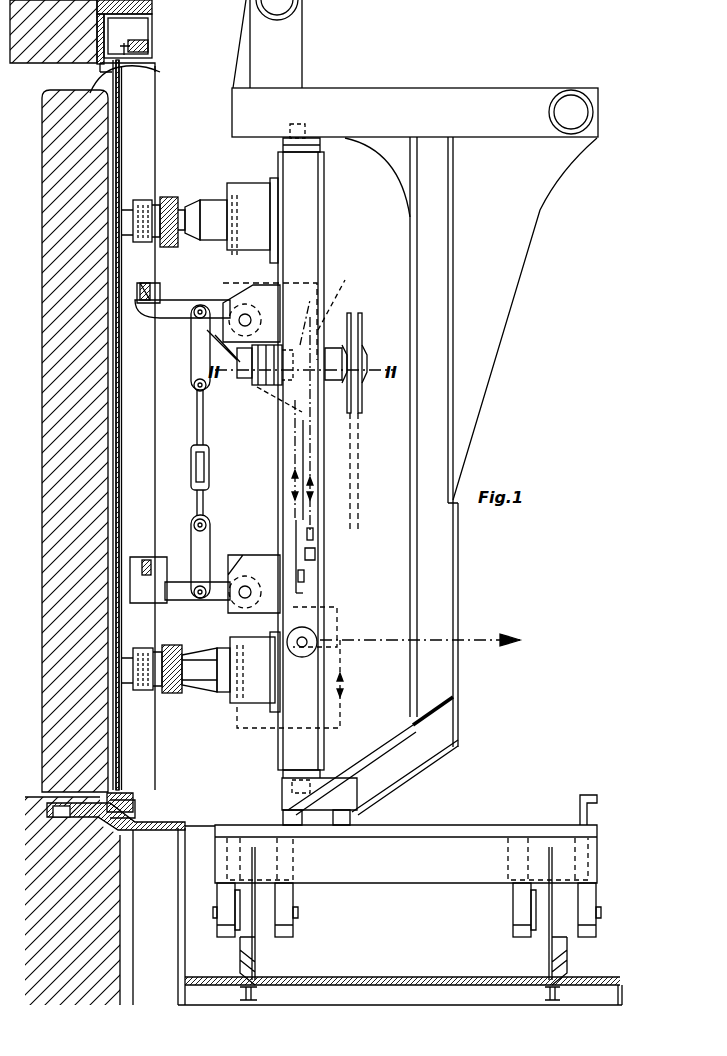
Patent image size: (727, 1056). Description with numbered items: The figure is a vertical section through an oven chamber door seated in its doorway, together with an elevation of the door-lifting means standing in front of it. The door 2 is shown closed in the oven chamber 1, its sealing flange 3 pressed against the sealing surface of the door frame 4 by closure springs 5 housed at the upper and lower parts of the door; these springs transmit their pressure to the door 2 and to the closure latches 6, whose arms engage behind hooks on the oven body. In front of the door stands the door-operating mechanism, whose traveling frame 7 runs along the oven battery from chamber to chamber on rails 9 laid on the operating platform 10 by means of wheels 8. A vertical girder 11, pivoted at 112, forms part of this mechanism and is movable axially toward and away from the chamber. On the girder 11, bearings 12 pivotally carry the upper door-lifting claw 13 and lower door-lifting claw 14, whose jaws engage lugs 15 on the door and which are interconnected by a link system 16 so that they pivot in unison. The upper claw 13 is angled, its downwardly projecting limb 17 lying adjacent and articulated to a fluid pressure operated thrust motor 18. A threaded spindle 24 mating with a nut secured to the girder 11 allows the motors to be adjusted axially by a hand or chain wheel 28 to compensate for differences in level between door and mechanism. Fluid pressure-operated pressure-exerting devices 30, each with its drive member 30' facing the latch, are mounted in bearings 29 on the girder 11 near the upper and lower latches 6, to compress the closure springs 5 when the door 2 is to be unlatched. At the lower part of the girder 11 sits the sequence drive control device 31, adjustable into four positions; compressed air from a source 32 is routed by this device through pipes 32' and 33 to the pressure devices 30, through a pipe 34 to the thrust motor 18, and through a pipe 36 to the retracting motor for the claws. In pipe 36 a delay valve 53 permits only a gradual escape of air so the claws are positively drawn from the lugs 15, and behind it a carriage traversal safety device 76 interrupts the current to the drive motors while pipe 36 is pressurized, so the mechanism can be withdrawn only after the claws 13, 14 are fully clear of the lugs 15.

The oven chamber 1 is at (80, 78).
The door 2 is at (60, 144).
The sealing flange 3 is at (128, 47).
The door frame 4 is at (110, 32).
The closure springs 5 is at (145, 200).
The closure latches 6 is at (170, 200).
The traveling frame 7 is at (425, 855).
The wheels 8 is at (560, 940).
The rails 9 is at (560, 977).
The operating platform 10 is at (585, 990).
The vertical girder 11 is at (303, 193).
The pivot of vertical girder 112 is at (300, 126).
The bearings 12 is at (236, 290).
The upper door-lifting claw 13 is at (172, 312).
The lower door-lifting claw 14 is at (152, 562).
The lugs 15 is at (152, 290).
The link system 16 is at (198, 412).
The downwardly projecting limb 17 is at (240, 372).
The thrust motor 18 is at (258, 386).
The spindle 24 is at (329, 307).
The chain wheel 28 is at (356, 330).
The bearings 29 is at (257, 197).
The pressure-exerting devices 30 is at (220, 200).
The drive cone 30' is at (196, 208).
The sequence drive control device 31 is at (302, 657).
The compressed air source 32 is at (420, 631).
The pipe 32' is at (306, 423).
The pipe 33 is at (337, 644).
The pipe 34 is at (303, 593).
The pipe 36 is at (303, 443).
The delay valve 53 is at (305, 577).
The carriage traversal safety device 76 is at (316, 552).